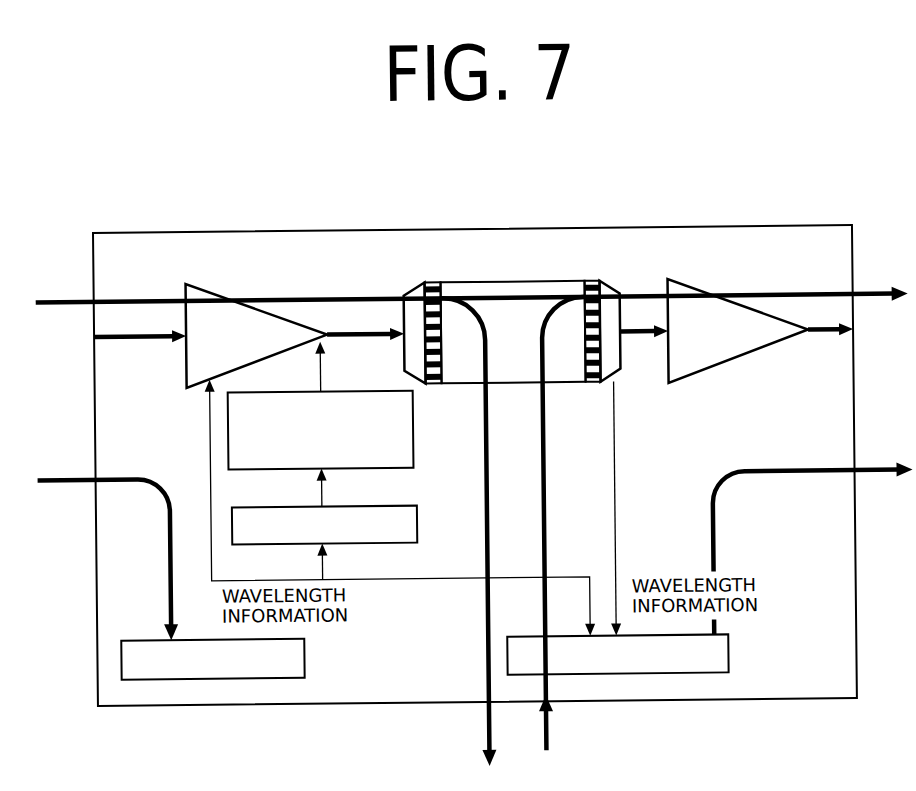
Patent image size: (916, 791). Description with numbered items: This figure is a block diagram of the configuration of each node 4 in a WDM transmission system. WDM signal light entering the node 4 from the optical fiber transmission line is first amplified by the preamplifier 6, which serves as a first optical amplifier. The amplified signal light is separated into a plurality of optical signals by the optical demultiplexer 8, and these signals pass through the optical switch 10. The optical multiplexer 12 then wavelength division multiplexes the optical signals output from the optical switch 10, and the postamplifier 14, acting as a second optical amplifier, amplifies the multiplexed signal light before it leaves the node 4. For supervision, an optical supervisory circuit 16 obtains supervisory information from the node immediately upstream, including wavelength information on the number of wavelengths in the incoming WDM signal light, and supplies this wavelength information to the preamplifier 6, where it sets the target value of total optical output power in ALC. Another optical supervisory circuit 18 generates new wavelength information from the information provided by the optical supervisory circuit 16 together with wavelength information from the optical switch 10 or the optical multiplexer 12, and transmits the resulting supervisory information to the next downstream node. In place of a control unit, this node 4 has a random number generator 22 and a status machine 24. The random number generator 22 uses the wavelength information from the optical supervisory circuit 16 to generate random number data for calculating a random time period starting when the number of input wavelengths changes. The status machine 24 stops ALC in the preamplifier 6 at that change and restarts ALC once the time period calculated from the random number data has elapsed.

The node 4 is at (512, 233).
The preamplifier 6 is at (185, 376).
The optical demultiplexer 8 is at (403, 356).
The optical switch 10 is at (516, 387).
The optical multiplexer 12 is at (619, 375).
The postamplifier 14 is at (731, 370).
The optical supervisory circuit 16 is at (302, 662).
The optical supervisory circuit 18 is at (726, 659).
The random number generator 22 is at (414, 528).
The status machine 24 is at (411, 431).